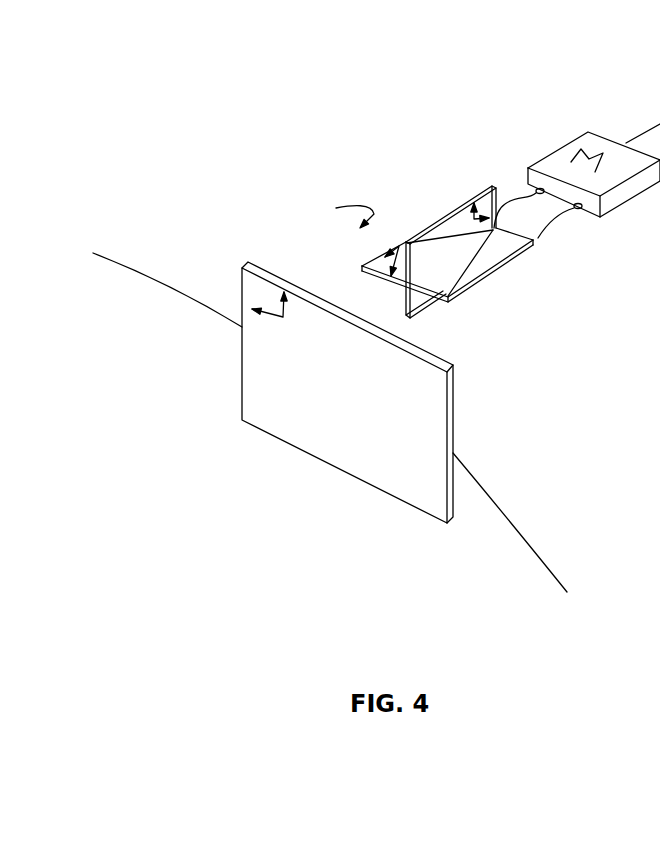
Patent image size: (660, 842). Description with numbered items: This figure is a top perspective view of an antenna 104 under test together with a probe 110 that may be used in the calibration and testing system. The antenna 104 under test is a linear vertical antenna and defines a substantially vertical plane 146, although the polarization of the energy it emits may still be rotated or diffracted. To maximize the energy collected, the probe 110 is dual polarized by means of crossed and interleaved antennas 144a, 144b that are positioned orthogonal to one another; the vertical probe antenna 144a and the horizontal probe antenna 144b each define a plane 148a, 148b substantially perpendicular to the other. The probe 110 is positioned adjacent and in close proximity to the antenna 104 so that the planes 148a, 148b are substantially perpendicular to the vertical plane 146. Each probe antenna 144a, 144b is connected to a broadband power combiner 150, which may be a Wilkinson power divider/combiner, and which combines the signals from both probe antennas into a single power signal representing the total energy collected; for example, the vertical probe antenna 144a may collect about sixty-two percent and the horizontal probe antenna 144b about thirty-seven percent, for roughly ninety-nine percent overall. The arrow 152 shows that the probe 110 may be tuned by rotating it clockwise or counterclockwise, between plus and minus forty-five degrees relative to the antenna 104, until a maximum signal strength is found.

The antenna under test 104 is at (300, 387).
The probe 110 is at (491, 314).
The vertical probe antenna 144a is at (426, 305).
The horizontal probe antenna 144b is at (385, 255).
The vertical plane 146 is at (253, 309).
The plane 148a is at (474, 219).
The plane 148b is at (399, 246).
The broadband power combiner 150 is at (593, 146).
The arrow 152 is at (333, 212).